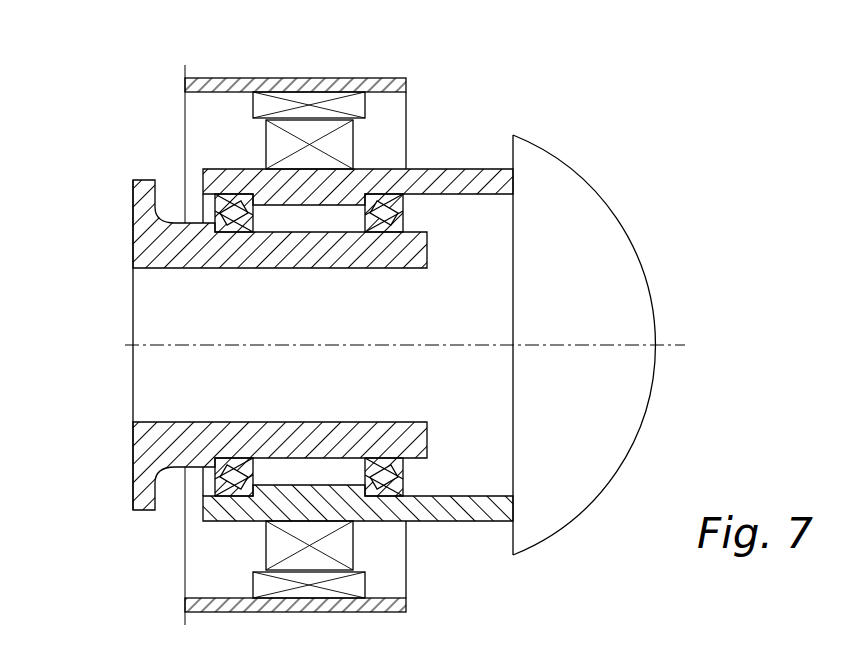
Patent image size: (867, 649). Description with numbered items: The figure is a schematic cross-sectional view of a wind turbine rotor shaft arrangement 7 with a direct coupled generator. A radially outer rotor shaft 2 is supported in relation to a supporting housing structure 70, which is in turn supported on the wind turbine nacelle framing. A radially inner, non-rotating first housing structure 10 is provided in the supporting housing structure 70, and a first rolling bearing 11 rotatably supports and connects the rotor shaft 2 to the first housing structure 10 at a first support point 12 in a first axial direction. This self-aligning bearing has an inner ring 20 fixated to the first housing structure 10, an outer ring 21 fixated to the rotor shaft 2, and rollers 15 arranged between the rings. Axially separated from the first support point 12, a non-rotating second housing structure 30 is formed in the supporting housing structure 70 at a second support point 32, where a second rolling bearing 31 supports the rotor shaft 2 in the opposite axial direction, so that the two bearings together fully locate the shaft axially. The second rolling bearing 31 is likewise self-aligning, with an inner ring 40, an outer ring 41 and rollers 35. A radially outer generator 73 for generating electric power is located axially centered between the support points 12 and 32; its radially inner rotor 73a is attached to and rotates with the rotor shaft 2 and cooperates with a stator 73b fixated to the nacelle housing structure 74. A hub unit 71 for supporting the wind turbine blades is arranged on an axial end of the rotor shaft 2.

The wind turbine rotor shaft arrangement 7 is at (70, 160).
The rotor shaft 2 is at (493, 175).
The first housing structure 10 is at (255, 345).
The first rolling bearing 11 is at (266, 228).
The first support point 12 is at (232, 281).
The rollers 15 is at (209, 314).
The inner ring 20 is at (236, 234).
The outer ring 21 is at (233, 196).
The second housing structure 30 is at (380, 238).
The second rolling bearing 31 is at (354, 228).
The second support point 32 is at (385, 281).
The rollers 35 is at (406, 316).
The inner ring 40 is at (398, 234).
The outer ring 41 is at (387, 196).
The supporting housing structure 70 is at (170, 258).
The hub unit 71 is at (585, 205).
The generator 73 is at (361, 308).
The rotor 73a is at (322, 128).
The stator 73b is at (280, 104).
The nacelle housing structure 74 is at (228, 82).